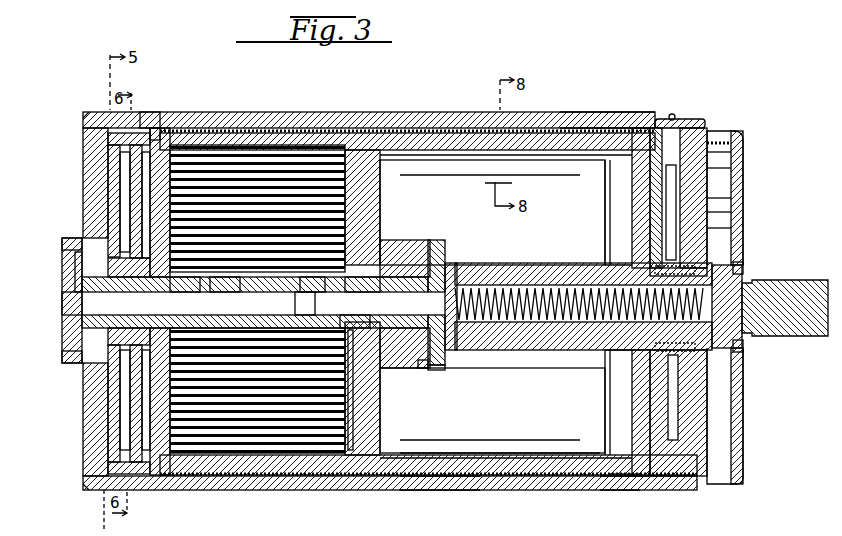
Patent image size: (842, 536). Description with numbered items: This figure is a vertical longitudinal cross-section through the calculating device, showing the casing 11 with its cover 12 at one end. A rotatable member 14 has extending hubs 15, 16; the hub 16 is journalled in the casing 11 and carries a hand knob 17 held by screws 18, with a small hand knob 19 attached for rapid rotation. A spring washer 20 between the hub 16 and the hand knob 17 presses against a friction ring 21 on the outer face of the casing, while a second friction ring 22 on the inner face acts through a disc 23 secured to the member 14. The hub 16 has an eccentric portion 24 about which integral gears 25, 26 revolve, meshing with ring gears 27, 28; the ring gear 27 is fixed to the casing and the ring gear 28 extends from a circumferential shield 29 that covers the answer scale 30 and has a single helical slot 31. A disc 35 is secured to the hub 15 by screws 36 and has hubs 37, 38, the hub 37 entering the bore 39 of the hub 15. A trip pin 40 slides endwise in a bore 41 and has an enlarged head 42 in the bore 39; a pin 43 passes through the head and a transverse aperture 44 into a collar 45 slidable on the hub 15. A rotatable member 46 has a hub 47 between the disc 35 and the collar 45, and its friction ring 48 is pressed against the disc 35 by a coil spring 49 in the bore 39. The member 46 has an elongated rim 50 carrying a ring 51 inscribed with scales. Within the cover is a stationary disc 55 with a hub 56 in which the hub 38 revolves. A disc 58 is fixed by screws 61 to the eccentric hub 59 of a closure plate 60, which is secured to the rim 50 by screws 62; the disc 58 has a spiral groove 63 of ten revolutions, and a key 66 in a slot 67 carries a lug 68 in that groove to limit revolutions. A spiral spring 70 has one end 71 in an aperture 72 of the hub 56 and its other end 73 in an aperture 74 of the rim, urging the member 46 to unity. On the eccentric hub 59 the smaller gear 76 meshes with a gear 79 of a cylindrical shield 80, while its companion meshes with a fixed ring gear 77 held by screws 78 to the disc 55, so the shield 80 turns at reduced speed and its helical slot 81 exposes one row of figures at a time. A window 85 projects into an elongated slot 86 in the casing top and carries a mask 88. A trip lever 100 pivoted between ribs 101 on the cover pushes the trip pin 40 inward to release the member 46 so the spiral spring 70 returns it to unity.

The casing 11 is at (490, 490).
The cover 12 is at (110, 440).
The rotatable member 14 is at (634, 197).
The hub 15 is at (524, 268).
The hub 16 is at (744, 283).
The hand knob 17 is at (738, 184).
The screws 18 is at (736, 270).
The small hand knob 19 is at (792, 282).
The spring washer 20 is at (712, 213).
The friction ring 21 is at (731, 152).
The second friction ring 22 is at (712, 198).
The disc 23 is at (712, 229).
The eccentric portion 24 is at (662, 270).
The gear 25 is at (722, 168).
The gear 26 is at (668, 252).
The ring gear 27 is at (680, 118).
The ring gear 28 is at (652, 236).
The circumferential shield 29 is at (628, 480).
The answer scale 30 is at (612, 480).
The helical slot 31 is at (620, 482).
The disc 35 is at (352, 207).
The screws 36 is at (385, 256).
The hub 37 is at (360, 292).
The hub 38 is at (310, 290).
The bore 39 is at (398, 358).
The trip pin 40 is at (70, 305).
The bore 41 is at (355, 315).
The enlarged head 42 is at (450, 340).
The pin 43 is at (438, 368).
The transverse aperture 44 is at (456, 270).
The collar 45 is at (447, 252).
The rotatable member 46 is at (370, 417).
The hub 47 is at (422, 368).
The friction ring 48 is at (353, 437).
The coil spring 49 is at (551, 324).
The elongated rim 50 is at (432, 455).
The ring 51 is at (428, 478).
The disc 55 is at (110, 386).
The hub 56 is at (180, 290).
The disc 58 is at (145, 228).
The eccentric hub 59 is at (128, 282).
The closure plate 60 is at (163, 128).
The screws 61 is at (76, 270).
The screws 62 is at (170, 472).
The spiral groove 63 is at (124, 405).
The key 66 is at (122, 183).
The slot 67 is at (135, 215).
The lug 68 is at (108, 166).
The spiral spring 70 is at (252, 453).
The end 71 is at (305, 310).
The aperture 72 is at (210, 290).
The end 73 is at (255, 145).
The aperture 74 is at (347, 125).
The gear 76 is at (143, 318).
The fixed ring gear 77 is at (135, 455).
The screws 78 is at (105, 139).
The gear 79 is at (145, 378).
The cylindrical shield 80 is at (222, 116).
The slot 81 is at (360, 476).
The window 85 is at (582, 115).
The elongated slot 86 is at (155, 118).
The mask 88 is at (408, 116).
The trip lever 100 is at (62, 292).
The ribs 101 is at (66, 246).